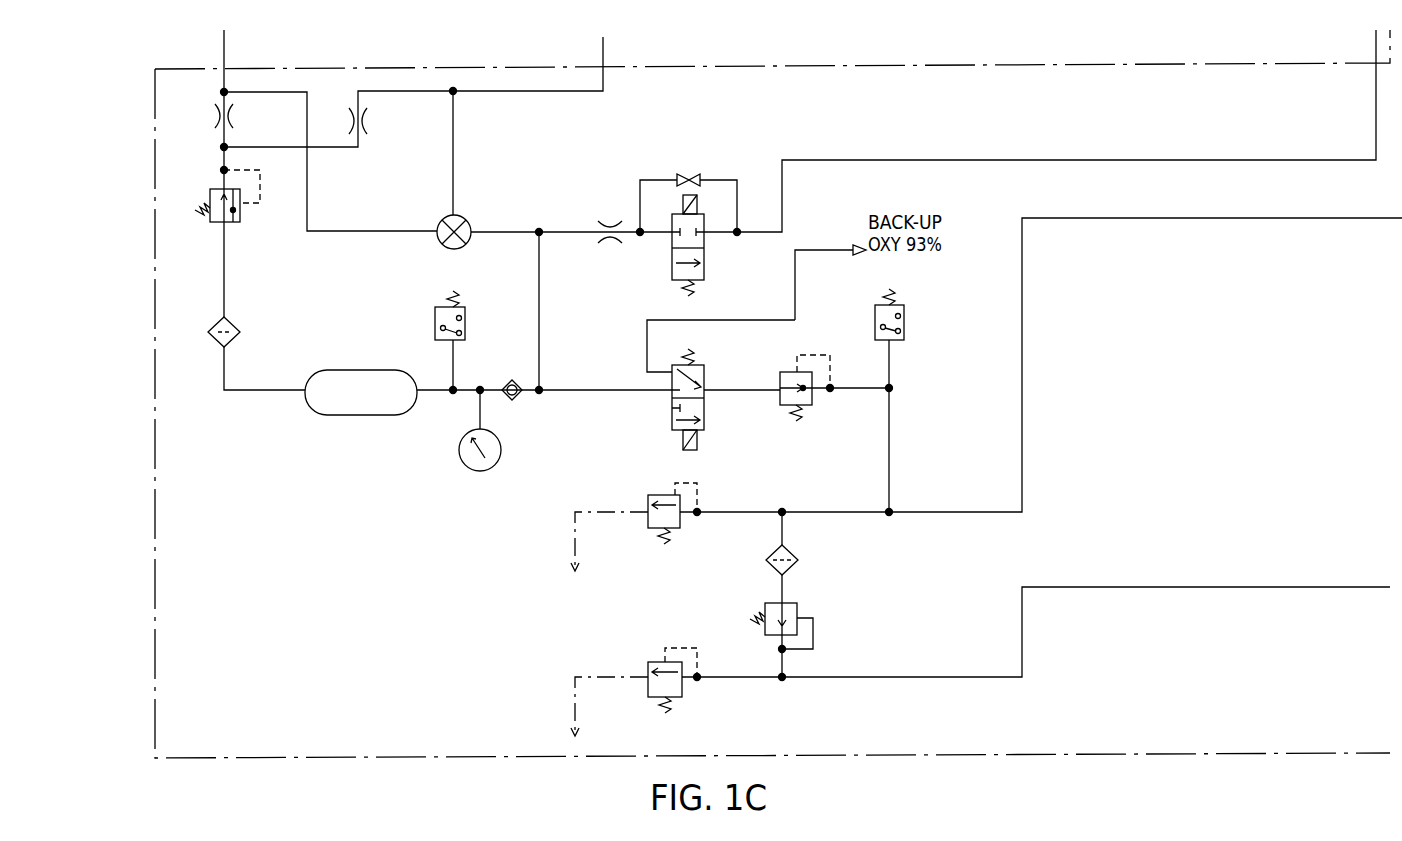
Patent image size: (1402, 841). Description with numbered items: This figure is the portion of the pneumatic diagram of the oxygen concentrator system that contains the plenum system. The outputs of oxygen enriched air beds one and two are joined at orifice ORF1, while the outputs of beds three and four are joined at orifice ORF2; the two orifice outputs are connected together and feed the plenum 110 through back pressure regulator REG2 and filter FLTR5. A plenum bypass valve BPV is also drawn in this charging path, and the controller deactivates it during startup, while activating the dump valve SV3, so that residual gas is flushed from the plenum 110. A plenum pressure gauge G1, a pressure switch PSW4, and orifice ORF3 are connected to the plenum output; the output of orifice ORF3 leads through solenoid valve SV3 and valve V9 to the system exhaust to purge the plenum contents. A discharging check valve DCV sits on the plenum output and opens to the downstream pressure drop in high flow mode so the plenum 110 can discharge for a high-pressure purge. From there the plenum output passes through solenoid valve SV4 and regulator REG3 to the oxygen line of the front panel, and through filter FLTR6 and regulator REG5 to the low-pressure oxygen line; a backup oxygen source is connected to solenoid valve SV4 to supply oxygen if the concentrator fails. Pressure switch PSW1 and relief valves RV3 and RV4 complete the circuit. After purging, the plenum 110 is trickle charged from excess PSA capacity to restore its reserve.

The plenum 110 is at (362, 411).
The orifice ORF1 is at (247, 116).
The orifice ORF2 is at (381, 121).
The orifice ORF3 is at (607, 221).
The back pressure regulator REG2 is at (244, 198).
The regulator REG3 is at (805, 402).
The regulator REG5 is at (806, 640).
The filter FLTR5 is at (255, 332).
The filter FLTR6 is at (812, 557).
The plenum bypass valve BPV is at (470, 224).
The valve V9 is at (688, 170).
The dump valve SV3 is at (689, 255).
The solenoid valve SV4 is at (689, 390).
The pressure switch PSW1 is at (896, 303).
The pressure switch PSW4 is at (449, 328).
The discharging check valve DCV is at (510, 379).
The plenum pressure gauge G1 is at (480, 442).
The relief valve RV3 is at (634, 527).
The relief valve RV4 is at (634, 692).